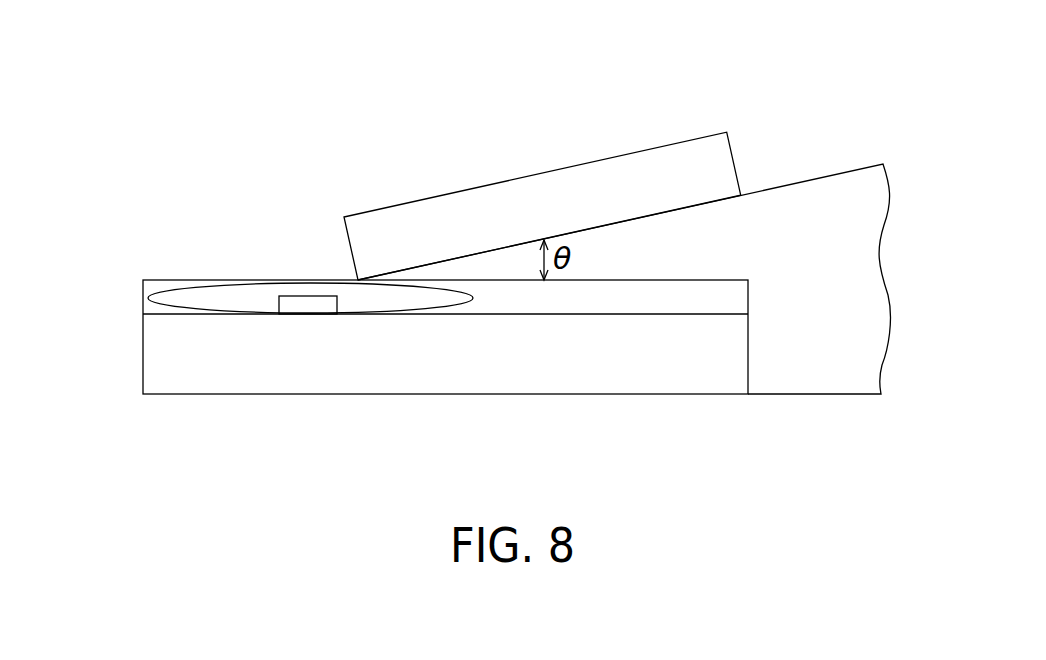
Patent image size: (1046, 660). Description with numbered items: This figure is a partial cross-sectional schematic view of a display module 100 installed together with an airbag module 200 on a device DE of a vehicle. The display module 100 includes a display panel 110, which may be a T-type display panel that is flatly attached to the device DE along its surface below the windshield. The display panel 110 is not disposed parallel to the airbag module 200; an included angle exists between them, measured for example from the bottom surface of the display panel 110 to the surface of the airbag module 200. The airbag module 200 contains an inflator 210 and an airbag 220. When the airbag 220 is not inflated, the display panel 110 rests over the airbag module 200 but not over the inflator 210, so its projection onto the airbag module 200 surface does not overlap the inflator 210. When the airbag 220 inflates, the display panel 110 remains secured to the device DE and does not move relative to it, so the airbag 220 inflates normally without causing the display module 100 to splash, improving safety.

The display panel 110 is at (605, 190).
The display module 100 is at (542, 168).
The device DE is at (808, 208).
The airbag module 200 is at (130, 282).
The inflator 210 is at (307, 305).
The airbag 220 is at (260, 302).